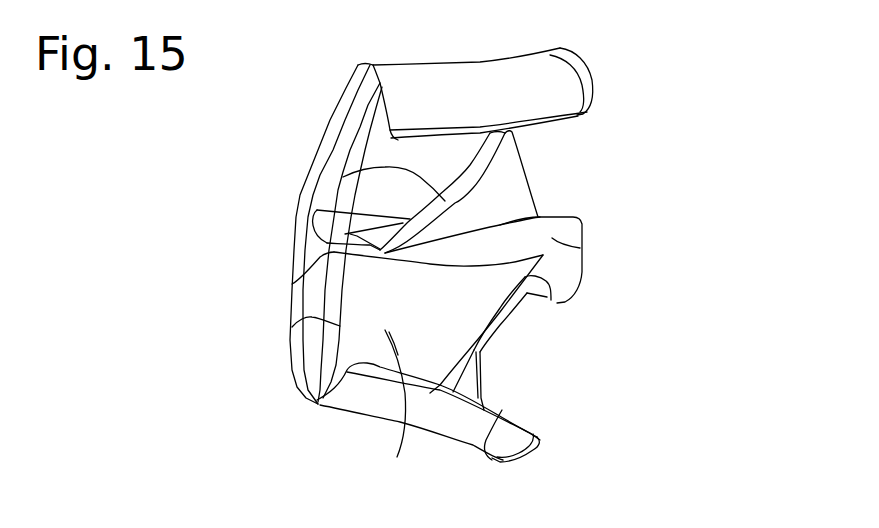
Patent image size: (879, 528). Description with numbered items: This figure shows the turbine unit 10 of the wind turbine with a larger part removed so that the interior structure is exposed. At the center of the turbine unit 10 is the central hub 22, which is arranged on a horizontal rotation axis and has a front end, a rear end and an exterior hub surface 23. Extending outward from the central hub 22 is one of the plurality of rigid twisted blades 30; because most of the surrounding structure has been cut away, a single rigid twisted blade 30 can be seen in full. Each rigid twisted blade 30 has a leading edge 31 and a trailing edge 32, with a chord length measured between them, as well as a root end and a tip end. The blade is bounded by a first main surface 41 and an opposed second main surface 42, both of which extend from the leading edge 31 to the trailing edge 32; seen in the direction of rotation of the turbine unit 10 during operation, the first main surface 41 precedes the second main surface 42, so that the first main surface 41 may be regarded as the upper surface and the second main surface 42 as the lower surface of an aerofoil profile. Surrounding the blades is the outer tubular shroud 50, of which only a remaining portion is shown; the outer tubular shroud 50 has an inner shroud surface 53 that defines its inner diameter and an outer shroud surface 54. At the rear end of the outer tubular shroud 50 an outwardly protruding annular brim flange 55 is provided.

The turbine unit 10 is at (662, 300).
The annular brim flange 55 is at (588, 66).
The first main surface 41 is at (343, 177).
The second main surface 42 is at (478, 188).
The central hub 22 is at (317, 245).
The exterior hub surface 23 is at (583, 249).
The leading edge 31 is at (292, 284).
The rigid twisted blade 30 is at (447, 321).
The trailing edge 32 is at (551, 300).
The outer tubular shroud 50 is at (355, 420).
The inner shroud surface 53 is at (502, 410).
The outer shroud surface 54 is at (494, 428).